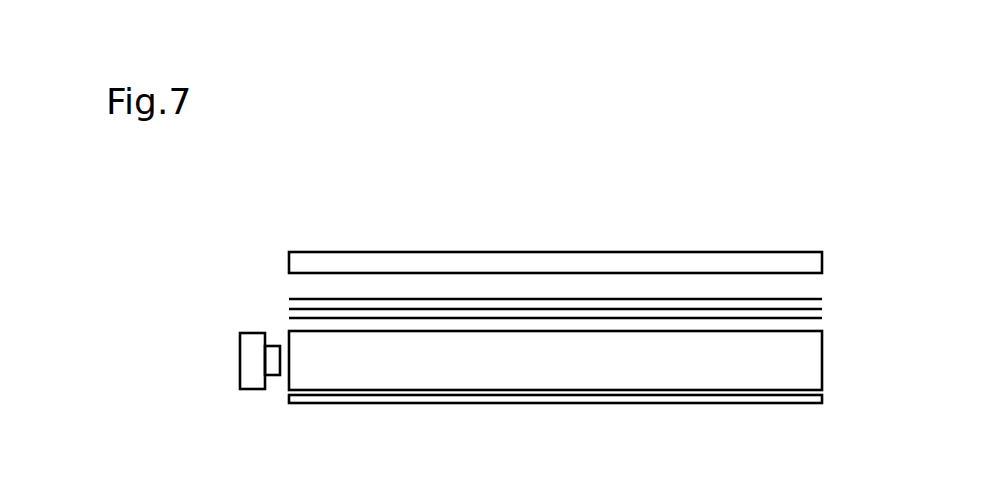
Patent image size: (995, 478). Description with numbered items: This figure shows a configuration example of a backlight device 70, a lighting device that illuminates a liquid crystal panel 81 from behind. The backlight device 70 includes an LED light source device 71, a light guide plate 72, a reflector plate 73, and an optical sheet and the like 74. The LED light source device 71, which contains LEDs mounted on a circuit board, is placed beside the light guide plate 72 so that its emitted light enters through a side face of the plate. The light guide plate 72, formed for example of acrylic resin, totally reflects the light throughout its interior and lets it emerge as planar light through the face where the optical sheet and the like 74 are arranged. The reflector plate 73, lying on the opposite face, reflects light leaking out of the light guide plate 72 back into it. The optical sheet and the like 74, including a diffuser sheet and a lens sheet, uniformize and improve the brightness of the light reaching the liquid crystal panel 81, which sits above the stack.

The backlight device 70 is at (272, 314).
The LED light source device 71 is at (257, 389).
The light guide plate 72 is at (822, 350).
The reflector plate 73 is at (822, 398).
The optical sheet and the like 74 is at (834, 309).
The liquid crystal panel 81 is at (822, 255).